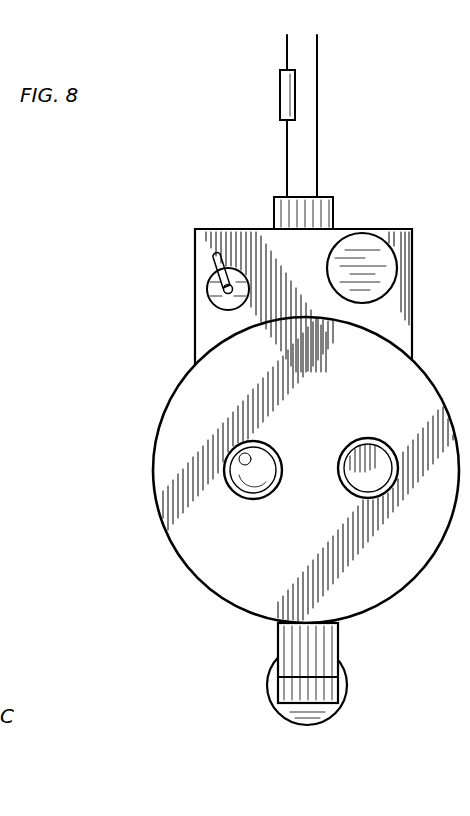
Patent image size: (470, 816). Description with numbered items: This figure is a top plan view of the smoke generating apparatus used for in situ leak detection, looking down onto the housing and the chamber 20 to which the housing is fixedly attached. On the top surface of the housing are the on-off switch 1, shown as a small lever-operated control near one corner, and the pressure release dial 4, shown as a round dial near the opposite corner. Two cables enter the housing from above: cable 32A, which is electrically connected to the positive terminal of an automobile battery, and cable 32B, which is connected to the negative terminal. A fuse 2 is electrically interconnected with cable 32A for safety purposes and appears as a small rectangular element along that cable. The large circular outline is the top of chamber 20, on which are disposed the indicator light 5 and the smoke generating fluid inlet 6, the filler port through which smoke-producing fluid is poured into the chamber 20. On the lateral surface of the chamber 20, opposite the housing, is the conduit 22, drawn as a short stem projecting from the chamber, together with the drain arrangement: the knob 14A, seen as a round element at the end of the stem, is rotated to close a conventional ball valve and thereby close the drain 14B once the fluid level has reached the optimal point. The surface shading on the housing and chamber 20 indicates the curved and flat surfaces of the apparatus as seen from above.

The on-off switch 1 is at (212, 254).
The fuse 2 is at (280, 103).
The pressure release dial 4 is at (382, 248).
The indicator light 5 is at (236, 458).
The smoke generating fluid inlet 6 is at (362, 458).
The chamber 20 is at (173, 393).
The conduit 22 is at (323, 640).
The cable 32A is at (287, 175).
The cable 32B is at (318, 145).
The knob 14A is at (285, 718).
The drain 14B is at (18, 606).